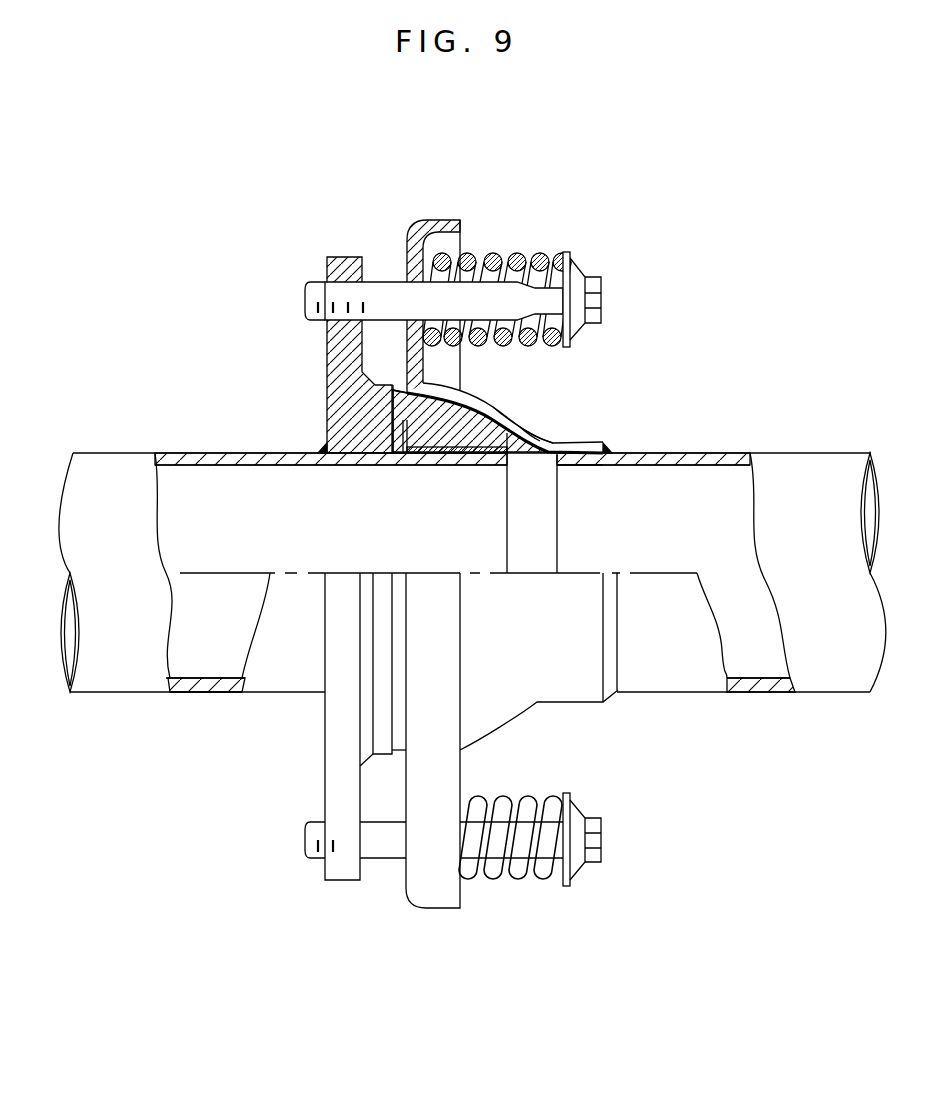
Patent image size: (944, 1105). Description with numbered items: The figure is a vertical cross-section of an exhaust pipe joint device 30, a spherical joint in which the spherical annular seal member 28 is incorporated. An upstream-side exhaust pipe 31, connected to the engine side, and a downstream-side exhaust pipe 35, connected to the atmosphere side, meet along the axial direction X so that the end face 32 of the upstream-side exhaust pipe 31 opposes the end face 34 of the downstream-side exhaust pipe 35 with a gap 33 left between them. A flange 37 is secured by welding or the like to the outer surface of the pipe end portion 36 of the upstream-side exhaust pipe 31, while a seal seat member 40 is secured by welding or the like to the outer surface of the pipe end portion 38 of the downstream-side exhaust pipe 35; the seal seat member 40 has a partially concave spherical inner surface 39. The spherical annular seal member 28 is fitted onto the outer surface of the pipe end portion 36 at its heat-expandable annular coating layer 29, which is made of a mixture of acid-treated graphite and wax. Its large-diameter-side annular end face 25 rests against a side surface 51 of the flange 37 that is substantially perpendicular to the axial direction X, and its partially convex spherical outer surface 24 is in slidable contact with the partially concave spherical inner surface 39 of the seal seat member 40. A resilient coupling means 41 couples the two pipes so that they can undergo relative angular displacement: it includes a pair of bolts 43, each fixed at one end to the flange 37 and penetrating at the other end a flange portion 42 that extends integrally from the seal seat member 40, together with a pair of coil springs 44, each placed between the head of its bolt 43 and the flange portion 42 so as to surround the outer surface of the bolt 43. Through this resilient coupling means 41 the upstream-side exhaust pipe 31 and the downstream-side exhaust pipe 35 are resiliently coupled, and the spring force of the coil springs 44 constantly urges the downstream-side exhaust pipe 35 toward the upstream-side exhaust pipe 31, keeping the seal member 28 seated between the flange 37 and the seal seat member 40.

The partially convex spherical outer surface 24 is at (478, 405).
The large-diameter-side annular end face 25 is at (393, 440).
The spherical annular seal member 28 is at (427, 410).
The heat-expandable annular coating layer 29 is at (490, 452).
The exhaust pipe joint device 30 is at (674, 331).
The upstream-side exhaust pipe 31 is at (116, 452).
The end face 32 is at (517, 463).
The gap 33 is at (553, 455).
The end face 34 is at (535, 458).
The downstream-side exhaust pipe 35 is at (703, 452).
The pipe end portion 36 is at (460, 458).
The flange 37 is at (327, 368).
The pipe end portion 38 is at (600, 460).
The partially concave spherical inner surface 39 is at (488, 425).
The seal seat member 40 is at (527, 420).
The resilient coupling means 41 is at (558, 243).
The flange portion 42 is at (428, 230).
The bolt 43 is at (482, 300).
The coil spring 44 is at (520, 260).
The side surface 51 is at (403, 425).
The axial direction X is at (195, 573).